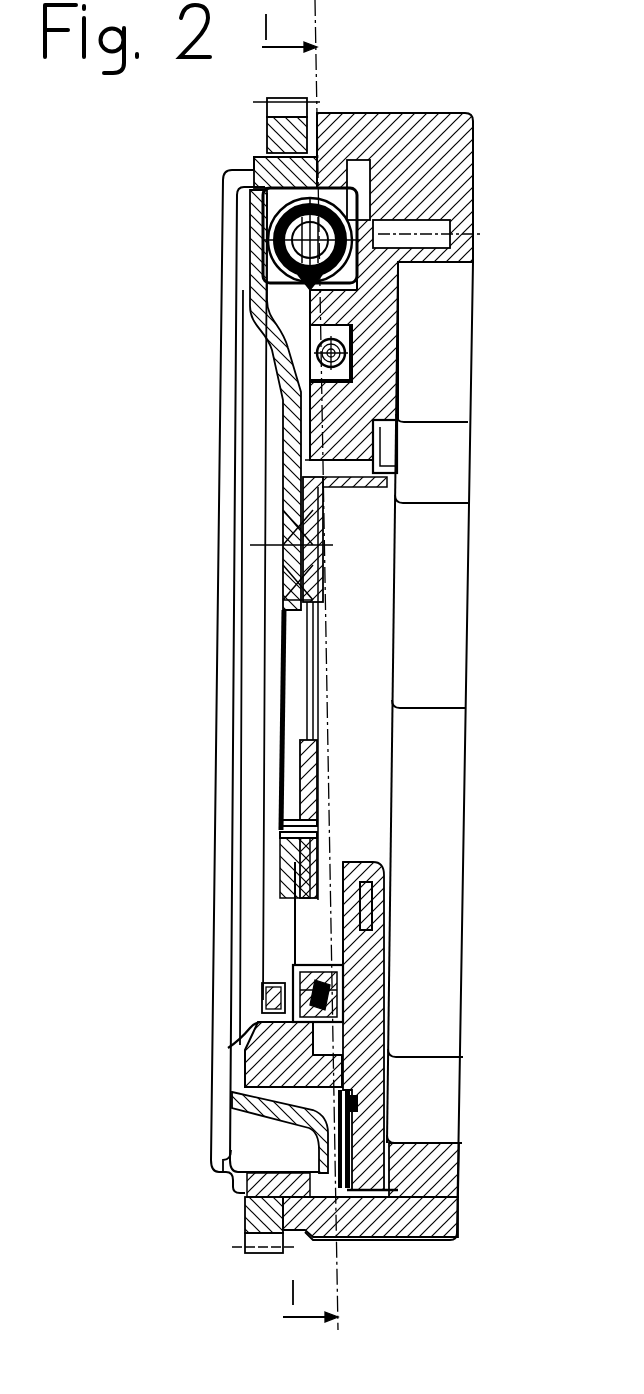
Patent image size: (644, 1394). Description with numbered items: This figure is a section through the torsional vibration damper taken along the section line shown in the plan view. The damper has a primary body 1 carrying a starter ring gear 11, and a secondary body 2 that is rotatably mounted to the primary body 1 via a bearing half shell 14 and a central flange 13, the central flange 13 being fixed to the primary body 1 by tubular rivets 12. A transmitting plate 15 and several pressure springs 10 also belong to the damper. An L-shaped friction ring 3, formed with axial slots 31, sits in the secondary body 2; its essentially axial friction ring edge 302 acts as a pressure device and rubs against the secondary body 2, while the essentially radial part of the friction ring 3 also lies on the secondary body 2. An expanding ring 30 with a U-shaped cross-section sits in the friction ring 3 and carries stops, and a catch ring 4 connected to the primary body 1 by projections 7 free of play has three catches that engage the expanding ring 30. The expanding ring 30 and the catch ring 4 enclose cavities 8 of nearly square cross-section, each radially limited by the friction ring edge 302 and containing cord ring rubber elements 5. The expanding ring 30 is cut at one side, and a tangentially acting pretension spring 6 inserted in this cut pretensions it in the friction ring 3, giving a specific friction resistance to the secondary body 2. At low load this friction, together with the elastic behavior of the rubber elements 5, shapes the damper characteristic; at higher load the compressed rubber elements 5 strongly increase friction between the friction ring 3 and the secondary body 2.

The primary body 1 is at (267, 313).
The secondary body 2 is at (432, 193).
The L-shaped friction ring 3 is at (388, 990).
The catch ring 4 is at (280, 382).
The cord ring rubber elements 5 is at (330, 988).
The pretension spring 6 is at (352, 350).
The projections 7 is at (285, 993).
The cavities 8 is at (340, 962).
The pressure springs 10 is at (248, 224).
The starter ring gear 11 is at (260, 1225).
The tubular rivets 12 is at (310, 822).
The central flange 13 is at (318, 497).
The bearing half shell 14 is at (385, 455).
The transmitting plate 15 is at (210, 1157).
The expanding ring 30 is at (300, 995).
The axial slots 31 is at (238, 1057).
The friction ring edge 302 is at (345, 1037).